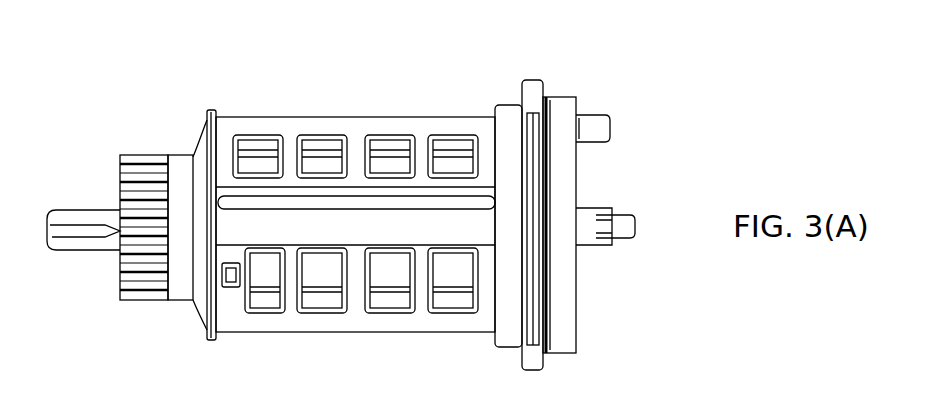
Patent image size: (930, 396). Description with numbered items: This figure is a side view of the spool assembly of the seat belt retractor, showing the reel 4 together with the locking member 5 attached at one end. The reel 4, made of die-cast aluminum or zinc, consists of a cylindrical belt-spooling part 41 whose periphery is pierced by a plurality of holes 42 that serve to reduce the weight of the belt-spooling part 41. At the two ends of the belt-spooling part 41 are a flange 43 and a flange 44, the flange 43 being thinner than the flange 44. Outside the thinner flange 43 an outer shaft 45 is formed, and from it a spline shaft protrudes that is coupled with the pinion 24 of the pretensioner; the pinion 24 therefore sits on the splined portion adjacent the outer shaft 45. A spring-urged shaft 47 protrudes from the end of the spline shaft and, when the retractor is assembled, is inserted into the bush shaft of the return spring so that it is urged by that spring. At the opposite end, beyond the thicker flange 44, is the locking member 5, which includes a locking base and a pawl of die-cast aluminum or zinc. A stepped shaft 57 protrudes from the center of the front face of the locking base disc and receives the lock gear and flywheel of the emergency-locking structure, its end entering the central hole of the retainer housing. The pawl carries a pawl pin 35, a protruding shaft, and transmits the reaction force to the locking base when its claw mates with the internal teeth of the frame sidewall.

The reel 4 is at (427, 105).
The locking member 5 is at (580, 93).
The pinion 24 is at (140, 151).
The pawl pin 35 is at (600, 129).
The belt-spooling part 41 is at (355, 128).
The holes 42 is at (320, 133).
The flange 43 is at (208, 106).
The flange 44 is at (505, 100).
The outer shaft 45 is at (172, 302).
The spring-urged shaft 47 is at (85, 207).
The stepped shaft 57 is at (620, 233).